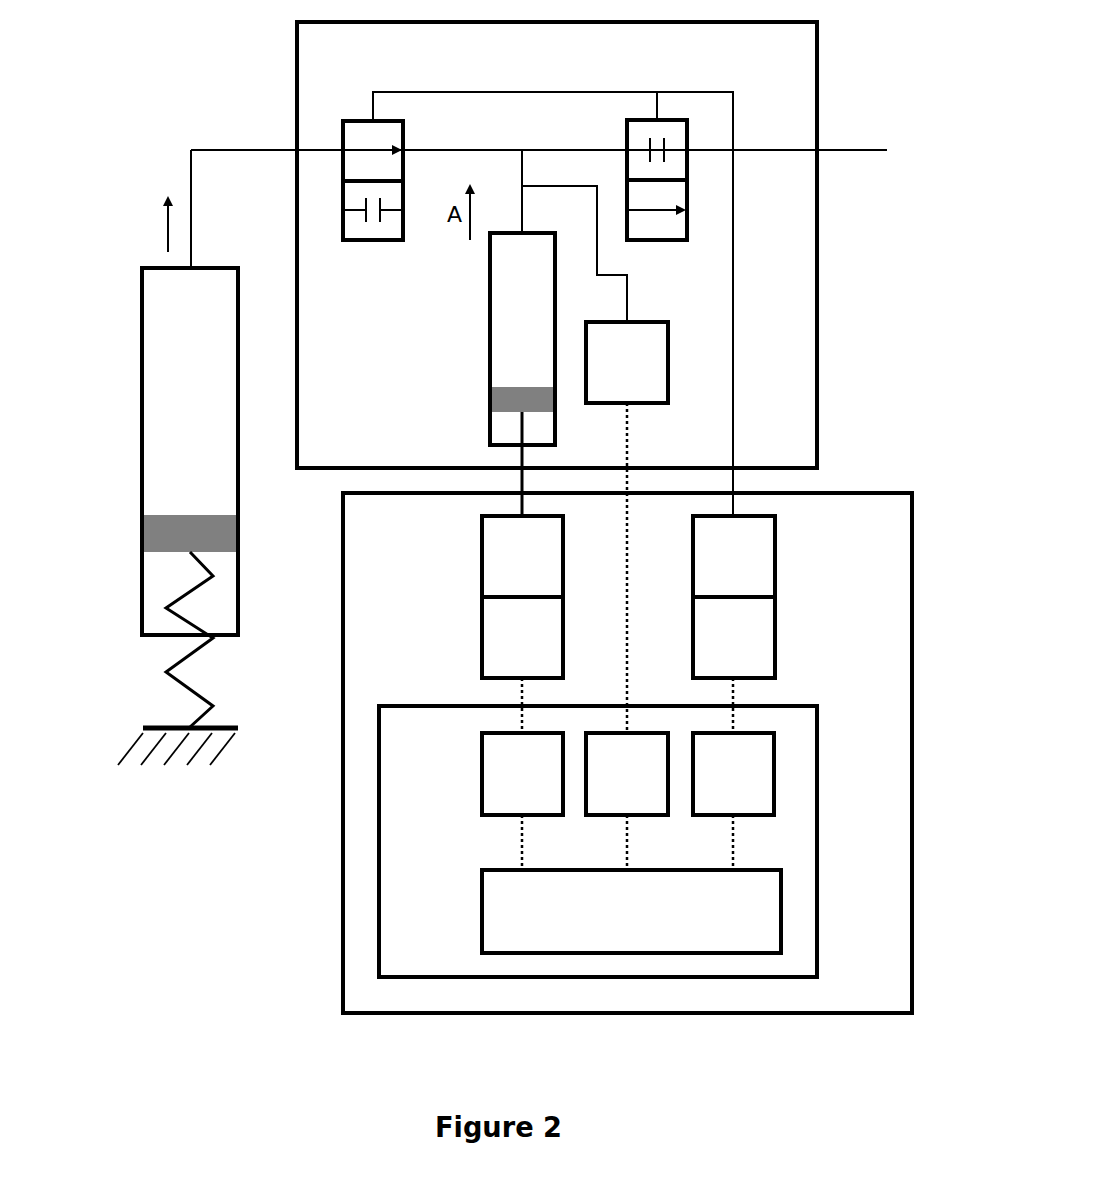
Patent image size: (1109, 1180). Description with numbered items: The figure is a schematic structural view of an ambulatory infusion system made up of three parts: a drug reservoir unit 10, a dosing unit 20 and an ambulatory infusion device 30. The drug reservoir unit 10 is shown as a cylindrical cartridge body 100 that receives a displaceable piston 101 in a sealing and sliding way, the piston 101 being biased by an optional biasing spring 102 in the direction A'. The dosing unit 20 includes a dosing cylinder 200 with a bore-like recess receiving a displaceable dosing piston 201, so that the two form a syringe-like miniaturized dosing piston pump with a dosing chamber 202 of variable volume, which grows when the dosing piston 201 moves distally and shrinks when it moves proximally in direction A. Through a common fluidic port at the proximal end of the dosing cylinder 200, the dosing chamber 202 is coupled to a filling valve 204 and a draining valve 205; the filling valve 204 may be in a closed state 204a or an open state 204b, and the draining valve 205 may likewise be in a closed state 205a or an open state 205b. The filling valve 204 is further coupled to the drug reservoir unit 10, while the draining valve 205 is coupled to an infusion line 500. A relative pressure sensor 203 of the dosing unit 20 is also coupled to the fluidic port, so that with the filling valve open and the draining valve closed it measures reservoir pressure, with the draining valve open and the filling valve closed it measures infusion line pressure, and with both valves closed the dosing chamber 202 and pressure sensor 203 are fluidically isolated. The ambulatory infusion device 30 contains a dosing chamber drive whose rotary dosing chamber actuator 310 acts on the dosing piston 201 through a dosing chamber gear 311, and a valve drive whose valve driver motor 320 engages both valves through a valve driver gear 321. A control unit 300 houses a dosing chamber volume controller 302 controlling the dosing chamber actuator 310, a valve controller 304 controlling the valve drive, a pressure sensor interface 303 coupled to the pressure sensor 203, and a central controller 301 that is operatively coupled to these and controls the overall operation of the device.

The drug reservoir unit 10 is at (145, 457).
The dosing unit 20 is at (356, 447).
The ambulatory infusion device 30 is at (416, 561).
The cartridge body 100 is at (142, 412).
The piston 101 is at (155, 530).
The biasing spring 102 is at (166, 675).
The dosing cylinder 200 is at (486, 374).
The dosing piston 201 is at (488, 397).
The dosing chamber 202 is at (543, 336).
The pressure sensor 203 is at (647, 376).
The filling valve 204 is at (357, 208).
The filling valve closed state 204a is at (357, 233).
The filling valve open state 204b is at (368, 138).
The draining valve 205 is at (640, 167).
The draining valve closed state 205a is at (636, 138).
The draining valve open state 205b is at (658, 233).
The control unit 300 is at (445, 939).
The central controller 301 is at (648, 927).
The dosing chamber volume controller 302 is at (543, 787).
The pressure sensor interface 303 is at (647, 787).
The valve controller 304 is at (753, 787).
The dosing chamber actuator 310 is at (543, 649).
The dosing chamber gear 311 is at (543, 572).
The valve driver motor 320 is at (753, 649).
The valve driver gear 321 is at (754, 572).
The infusion line 500 is at (839, 138).